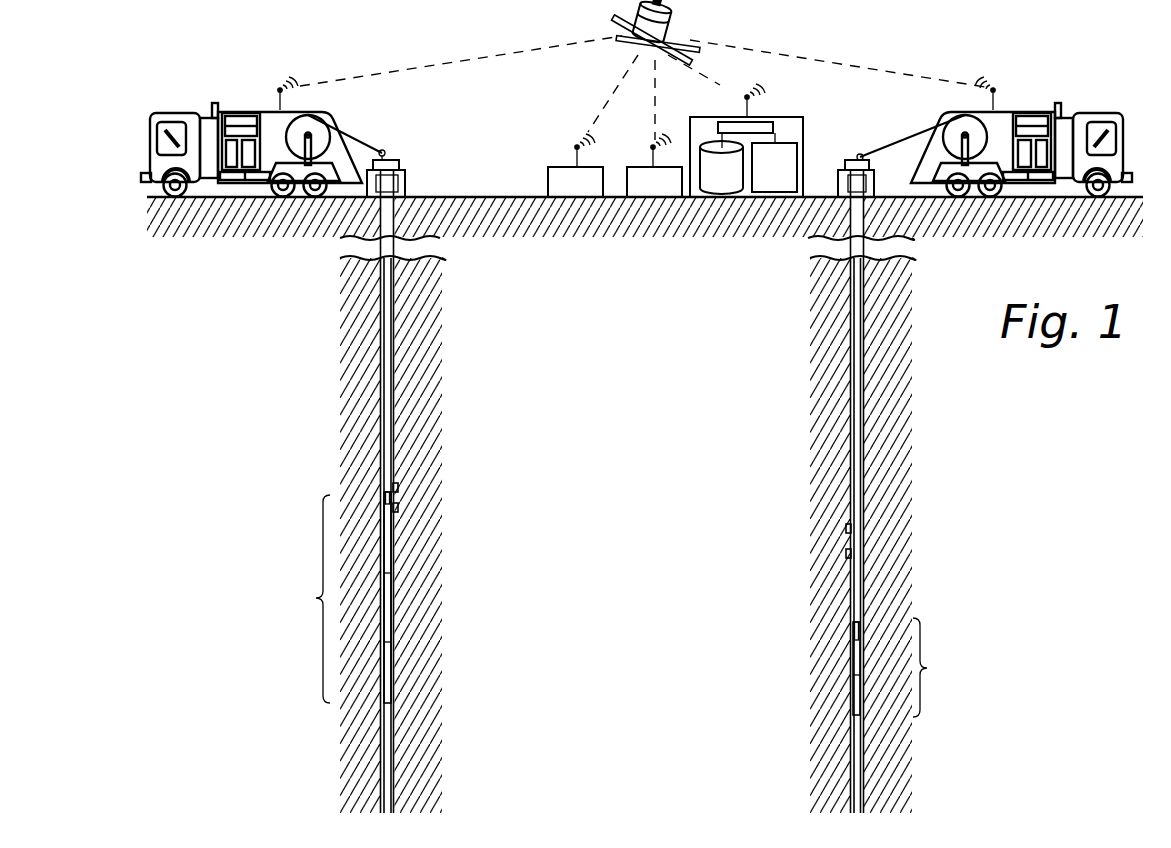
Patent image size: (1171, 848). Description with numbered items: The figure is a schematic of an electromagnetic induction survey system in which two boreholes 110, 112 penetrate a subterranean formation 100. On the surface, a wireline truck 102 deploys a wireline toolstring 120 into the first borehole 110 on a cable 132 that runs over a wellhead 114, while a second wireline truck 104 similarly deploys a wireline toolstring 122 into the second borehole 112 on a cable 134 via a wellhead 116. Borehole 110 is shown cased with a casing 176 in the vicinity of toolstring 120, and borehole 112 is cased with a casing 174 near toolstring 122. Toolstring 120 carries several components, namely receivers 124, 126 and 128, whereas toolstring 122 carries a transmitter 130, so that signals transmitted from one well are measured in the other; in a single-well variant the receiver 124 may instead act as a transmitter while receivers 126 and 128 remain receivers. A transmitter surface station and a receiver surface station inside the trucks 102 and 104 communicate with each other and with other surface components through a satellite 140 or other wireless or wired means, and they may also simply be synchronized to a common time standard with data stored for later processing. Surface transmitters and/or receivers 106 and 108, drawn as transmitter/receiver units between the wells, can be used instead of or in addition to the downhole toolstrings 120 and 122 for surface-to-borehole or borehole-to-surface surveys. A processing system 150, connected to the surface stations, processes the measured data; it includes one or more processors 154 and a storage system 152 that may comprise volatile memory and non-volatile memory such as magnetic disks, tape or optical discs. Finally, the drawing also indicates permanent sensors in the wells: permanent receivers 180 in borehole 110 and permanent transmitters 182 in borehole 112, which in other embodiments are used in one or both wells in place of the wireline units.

The subterranean formation 100 is at (595, 477).
The wireline truck 102 is at (234, 110).
The wireline truck 104 is at (1030, 110).
The surface transmitter and/or receiver 106 is at (548, 177).
The surface transmitter and/or receiver 108 is at (636, 167).
The borehole 110 is at (388, 353).
The borehole 112 is at (850, 403).
The wellhead 114 is at (398, 165).
The wellhead 116 is at (856, 158).
The wireline toolstring 120 is at (329, 597).
The wireline toolstring 122 is at (914, 667).
The receiver 124 is at (392, 527).
The receiver 126 is at (392, 604).
The receiver 128 is at (392, 670).
The transmitter 130 is at (856, 662).
The cable 132 is at (351, 137).
The cable 134 is at (905, 131).
The satellite 140 is at (682, 30).
The processing system 150 is at (754, 140).
The storage system 152 is at (707, 183).
The processor 154 is at (759, 179).
The casing 174 is at (856, 693).
The casing 176 is at (392, 632).
The permanent receiver 180 is at (399, 507).
The permanent transmitter 182 is at (846, 553).